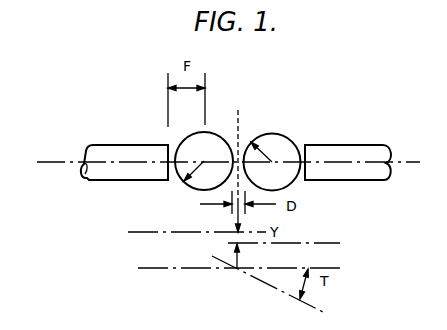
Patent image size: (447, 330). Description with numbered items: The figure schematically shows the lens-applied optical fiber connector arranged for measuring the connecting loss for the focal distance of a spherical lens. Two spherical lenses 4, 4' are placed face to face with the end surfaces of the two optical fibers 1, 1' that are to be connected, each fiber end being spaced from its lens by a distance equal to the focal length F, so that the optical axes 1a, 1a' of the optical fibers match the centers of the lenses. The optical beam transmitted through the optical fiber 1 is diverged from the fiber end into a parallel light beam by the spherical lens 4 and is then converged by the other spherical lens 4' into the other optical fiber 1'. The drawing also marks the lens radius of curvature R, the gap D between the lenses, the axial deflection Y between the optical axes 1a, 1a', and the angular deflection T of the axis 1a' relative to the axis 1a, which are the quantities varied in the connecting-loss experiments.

The optical fiber 1 is at (124, 147).
The optical fiber 1' is at (358, 147).
The optical axis 1a is at (221, 233).
The optical axis 1a' is at (326, 222).
The spherical lens 4 is at (204, 143).
The spherical lens 4' is at (272, 142).